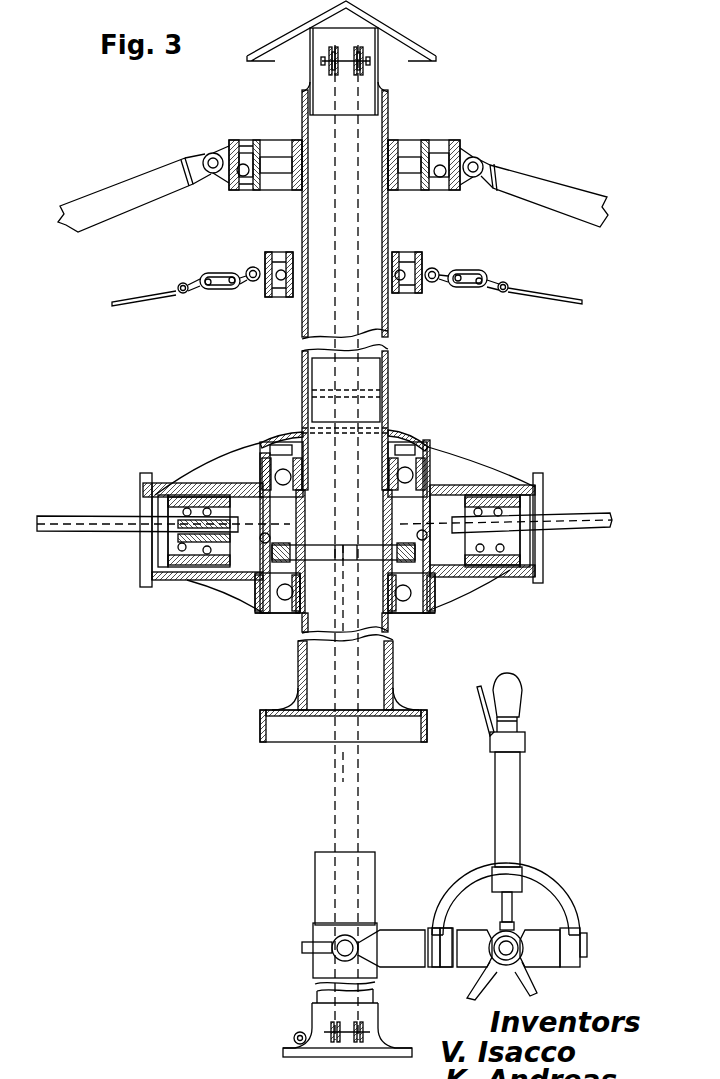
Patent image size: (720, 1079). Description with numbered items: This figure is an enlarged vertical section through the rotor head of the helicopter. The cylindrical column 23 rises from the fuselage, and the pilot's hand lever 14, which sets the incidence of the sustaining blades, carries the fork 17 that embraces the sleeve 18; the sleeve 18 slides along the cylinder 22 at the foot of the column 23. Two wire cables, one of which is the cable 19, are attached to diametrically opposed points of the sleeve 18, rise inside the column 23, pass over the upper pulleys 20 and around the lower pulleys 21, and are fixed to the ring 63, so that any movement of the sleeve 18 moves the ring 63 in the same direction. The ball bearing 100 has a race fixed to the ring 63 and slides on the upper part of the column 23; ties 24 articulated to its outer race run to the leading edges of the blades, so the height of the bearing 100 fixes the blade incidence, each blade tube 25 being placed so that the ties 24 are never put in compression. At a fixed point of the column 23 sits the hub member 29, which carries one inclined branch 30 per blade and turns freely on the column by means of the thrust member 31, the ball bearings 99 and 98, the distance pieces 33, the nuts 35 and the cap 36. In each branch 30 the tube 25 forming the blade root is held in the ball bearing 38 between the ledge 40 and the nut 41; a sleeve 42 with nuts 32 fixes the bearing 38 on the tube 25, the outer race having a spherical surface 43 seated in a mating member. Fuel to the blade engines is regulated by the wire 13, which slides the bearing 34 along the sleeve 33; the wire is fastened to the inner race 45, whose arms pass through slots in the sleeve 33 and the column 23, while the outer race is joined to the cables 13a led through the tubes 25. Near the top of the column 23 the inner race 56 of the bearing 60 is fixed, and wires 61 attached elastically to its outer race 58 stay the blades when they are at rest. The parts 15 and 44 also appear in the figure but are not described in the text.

The wire 13 is at (343, 772).
The cables 13a is at (83, 518).
The hand lever 14 is at (512, 803).
The handle hub 15 is at (522, 930).
The fork 17 is at (415, 935).
The sleeve 18 is at (316, 965).
The wire cable 19 is at (360, 104).
The upper pulleys 20 is at (364, 50).
The lower pulleys 21 is at (328, 1032).
The cylinder 22 is at (378, 870).
The cylindrical column 23 is at (295, 622).
The ties 24 is at (133, 185).
The tube 25 is at (47, 517).
The hub member 29 is at (438, 466).
The branches 30 is at (206, 580).
The thrust member 31 is at (399, 608).
The nuts 32 is at (216, 570).
The distance pieces 33 is at (394, 509).
The bearing 34 is at (283, 543).
The nut 35 is at (262, 440).
The cap 36 is at (293, 430).
The ball bearing 38 is at (148, 540).
The ledge 40 is at (226, 483).
The nut 41 is at (163, 483).
The sleeve 42 is at (176, 515).
The spherical surface 43 is at (196, 483).
The lower bearing block 44 is at (270, 603).
The inner race 45 is at (393, 616).
The interior race 56 is at (290, 249).
The exterior race 58 is at (430, 255).
The bearing 60 is at (403, 287).
The wires 61 is at (548, 305).
The ring 63 is at (392, 140).
The ball bearing 98 is at (403, 462).
The ball bearing 99 is at (283, 601).
The ball bearing 100 is at (243, 164).